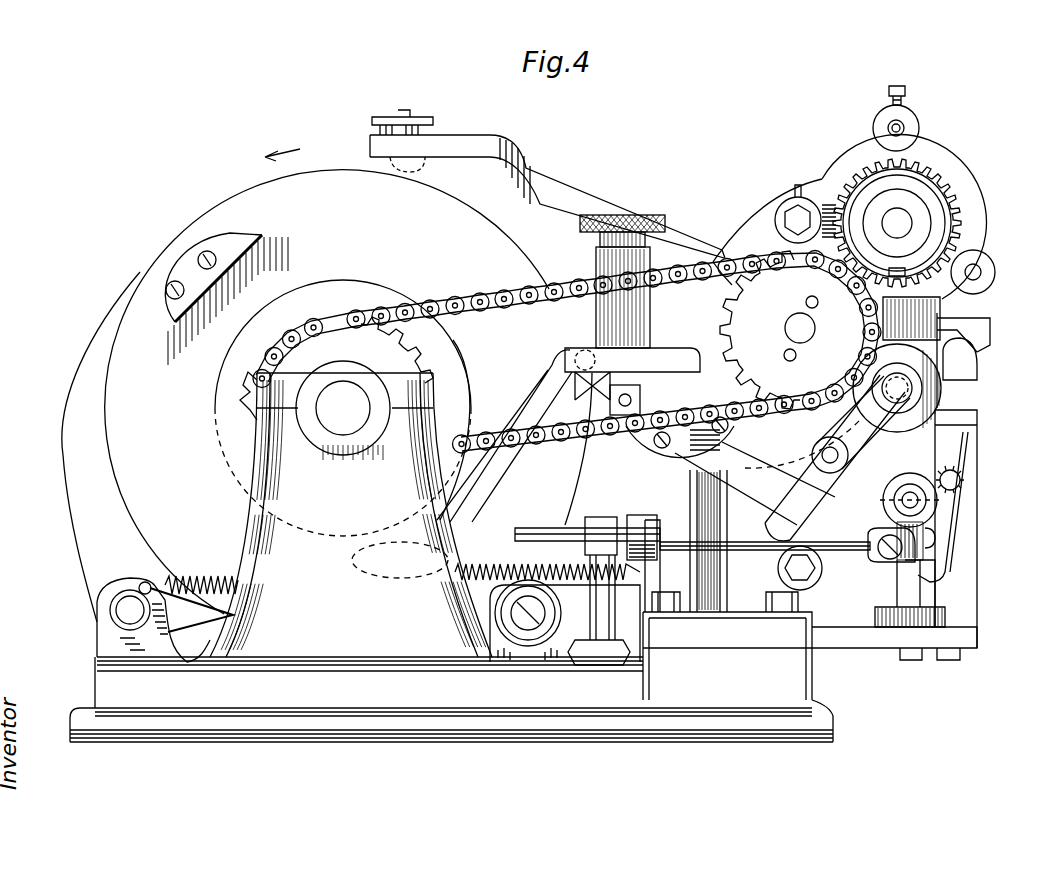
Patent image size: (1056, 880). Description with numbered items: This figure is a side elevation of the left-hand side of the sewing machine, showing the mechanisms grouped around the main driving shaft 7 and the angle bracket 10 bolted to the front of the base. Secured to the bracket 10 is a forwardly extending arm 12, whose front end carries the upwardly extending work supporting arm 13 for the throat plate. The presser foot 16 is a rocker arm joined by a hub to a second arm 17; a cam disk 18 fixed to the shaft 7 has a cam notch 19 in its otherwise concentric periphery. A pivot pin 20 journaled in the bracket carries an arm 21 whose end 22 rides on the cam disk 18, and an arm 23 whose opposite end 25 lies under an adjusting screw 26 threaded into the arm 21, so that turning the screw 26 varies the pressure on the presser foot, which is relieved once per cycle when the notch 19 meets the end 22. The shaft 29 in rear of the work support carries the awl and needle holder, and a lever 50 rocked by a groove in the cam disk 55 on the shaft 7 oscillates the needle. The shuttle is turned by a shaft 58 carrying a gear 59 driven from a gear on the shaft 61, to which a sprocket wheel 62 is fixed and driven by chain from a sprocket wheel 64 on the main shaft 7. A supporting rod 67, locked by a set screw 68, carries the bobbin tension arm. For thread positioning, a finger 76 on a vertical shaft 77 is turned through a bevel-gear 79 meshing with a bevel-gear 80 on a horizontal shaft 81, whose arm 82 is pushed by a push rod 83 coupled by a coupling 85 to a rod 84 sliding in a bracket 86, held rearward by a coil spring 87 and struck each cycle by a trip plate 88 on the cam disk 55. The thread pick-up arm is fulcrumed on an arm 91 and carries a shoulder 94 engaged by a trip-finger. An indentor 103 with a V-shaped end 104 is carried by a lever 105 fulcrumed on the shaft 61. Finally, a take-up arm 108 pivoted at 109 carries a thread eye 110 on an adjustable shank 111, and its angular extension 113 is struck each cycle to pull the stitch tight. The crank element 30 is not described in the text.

The main driving shaft 7 is at (333, 412).
The angle bracket 10 is at (451, 631).
The arm 12 is at (858, 640).
The work supporting arm 13 is at (968, 566).
The presser foot 16 is at (972, 360).
The arm 17 is at (842, 458).
The cam disk 18 is at (262, 331).
The cam notch 19 is at (245, 402).
The pivot pin 20 is at (630, 390).
The arm 21 is at (484, 488).
The end of arm 22 is at (350, 578).
The arm 23 is at (737, 480).
The end of arm 25 is at (590, 400).
The adjusting screw 26 is at (632, 228).
The shaft 29 is at (920, 390).
The crank arm 30 is at (861, 424).
The lever 50 is at (163, 585).
The cam disk 55 is at (326, 182).
The shaft 58 is at (905, 222).
The gear 59 is at (925, 185).
The shaft 61 is at (794, 322).
The sprocket wheel 62 is at (777, 343).
The sprocket wheel 64 is at (367, 328).
The supporting rod 67 is at (905, 127).
The set screw 68 is at (906, 90).
The finger 76 is at (962, 508).
The vertical shaft 77 is at (905, 592).
The bevel-gear 79 is at (935, 536).
The bevel-gear 80 is at (712, 260).
The horizontal shaft 81 is at (918, 520).
The arm 82 is at (925, 560).
The push rod 83 is at (470, 300).
The rod 84 is at (550, 527).
The coupling 85 is at (638, 515).
The bracket 86 is at (600, 626).
The coil spring 87 is at (470, 568).
The trip plate 88 is at (205, 262).
The arm 91 is at (742, 246).
The shoulder 94 is at (95, 386).
The indentor 103 is at (958, 300).
The V-shaped end 104 is at (985, 340).
The lever 105 is at (577, 190).
The arm 108 is at (650, 614).
The pivot 109 is at (528, 630).
The thread eye 110 is at (958, 480).
The shank 111 is at (962, 418).
The angular extension 113 is at (592, 527).